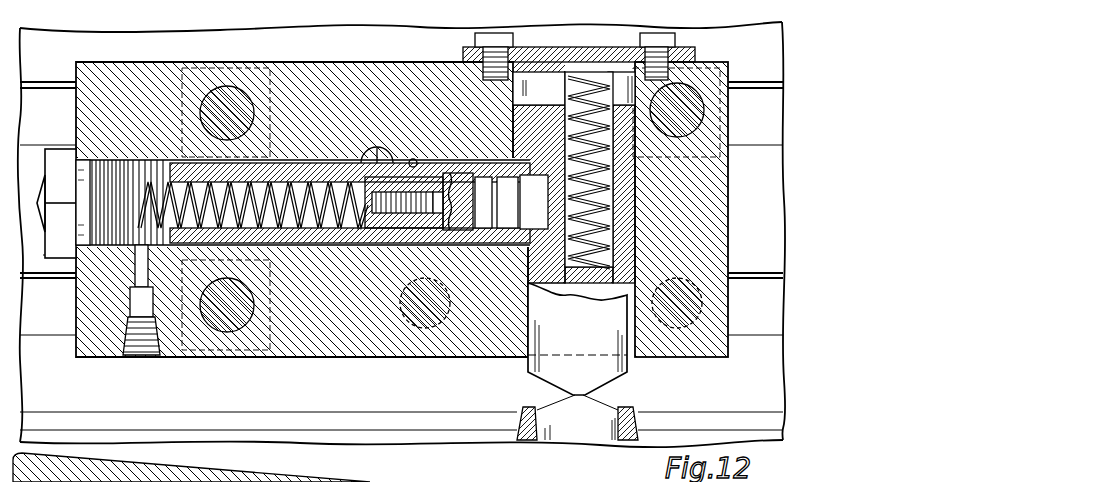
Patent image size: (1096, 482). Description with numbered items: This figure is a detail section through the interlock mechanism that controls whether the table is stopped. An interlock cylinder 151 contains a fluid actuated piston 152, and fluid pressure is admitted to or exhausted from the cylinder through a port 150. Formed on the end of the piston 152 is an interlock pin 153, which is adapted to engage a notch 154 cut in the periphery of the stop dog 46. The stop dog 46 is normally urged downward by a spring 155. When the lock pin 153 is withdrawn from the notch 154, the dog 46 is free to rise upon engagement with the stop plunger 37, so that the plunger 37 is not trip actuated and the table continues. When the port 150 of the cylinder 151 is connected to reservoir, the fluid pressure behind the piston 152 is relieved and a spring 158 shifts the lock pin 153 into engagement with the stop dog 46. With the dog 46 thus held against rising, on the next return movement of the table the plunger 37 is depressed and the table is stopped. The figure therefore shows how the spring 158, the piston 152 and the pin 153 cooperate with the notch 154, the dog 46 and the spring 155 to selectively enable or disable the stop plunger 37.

The stop plunger 37 is at (582, 410).
The stop dog 46 is at (572, 374).
The port 150 is at (378, 152).
The interlock cylinder 151 is at (343, 243).
The fluid actuated piston 152 is at (302, 245).
The interlock pin 153 is at (537, 198).
The notch 154 is at (537, 175).
The spring 155 is at (608, 92).
The spring 158 is at (283, 168).